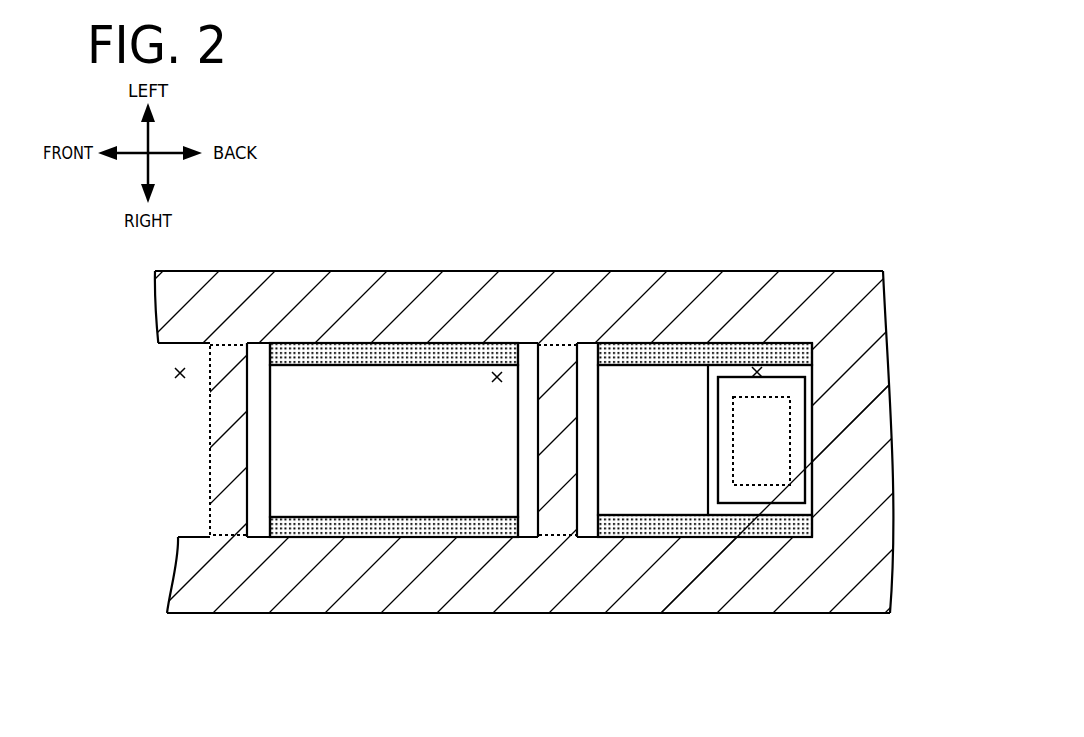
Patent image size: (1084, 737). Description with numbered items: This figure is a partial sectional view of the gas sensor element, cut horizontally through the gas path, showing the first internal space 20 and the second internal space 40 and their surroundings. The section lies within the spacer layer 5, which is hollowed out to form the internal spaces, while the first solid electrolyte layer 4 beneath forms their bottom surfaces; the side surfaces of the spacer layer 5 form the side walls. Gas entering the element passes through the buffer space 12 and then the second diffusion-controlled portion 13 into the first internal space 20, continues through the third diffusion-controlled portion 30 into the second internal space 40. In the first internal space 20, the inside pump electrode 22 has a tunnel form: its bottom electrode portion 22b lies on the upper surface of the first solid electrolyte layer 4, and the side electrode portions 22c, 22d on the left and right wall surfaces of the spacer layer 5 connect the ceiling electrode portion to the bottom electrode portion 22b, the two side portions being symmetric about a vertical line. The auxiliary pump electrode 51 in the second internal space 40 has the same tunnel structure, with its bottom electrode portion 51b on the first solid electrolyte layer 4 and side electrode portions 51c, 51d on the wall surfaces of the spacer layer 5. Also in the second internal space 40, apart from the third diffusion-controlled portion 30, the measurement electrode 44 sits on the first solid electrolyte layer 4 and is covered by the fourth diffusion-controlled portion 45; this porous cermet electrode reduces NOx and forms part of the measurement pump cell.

The first solid electrolyte layer 4 is at (805, 370).
The spacer layer 5 is at (867, 395).
The buffer space 12 is at (180, 368).
The second diffusion-controlled portion 13 is at (222, 343).
The first internal space 20 is at (497, 372).
The inside pump electrode 22 is at (392, 407).
The bottom electrode portion 22b is at (371, 375).
The side electrode portion 22c is at (408, 357).
The side electrode portion 22d is at (426, 523).
The third diffusion-controlled portion 30 is at (560, 343).
The second internal space 40 is at (757, 367).
The measurement electrode 44 is at (790, 440).
The fourth diffusion-controlled portion 45 is at (805, 478).
The auxiliary pump electrode 51 is at (757, 407).
The bottom electrode portion 51b is at (640, 375).
The side electrode portion 51c is at (680, 357).
The side electrode portion 51d is at (688, 523).